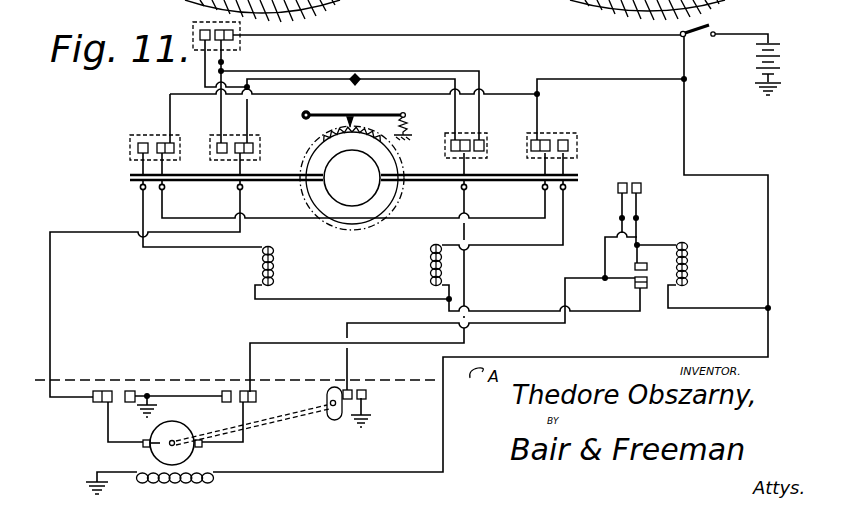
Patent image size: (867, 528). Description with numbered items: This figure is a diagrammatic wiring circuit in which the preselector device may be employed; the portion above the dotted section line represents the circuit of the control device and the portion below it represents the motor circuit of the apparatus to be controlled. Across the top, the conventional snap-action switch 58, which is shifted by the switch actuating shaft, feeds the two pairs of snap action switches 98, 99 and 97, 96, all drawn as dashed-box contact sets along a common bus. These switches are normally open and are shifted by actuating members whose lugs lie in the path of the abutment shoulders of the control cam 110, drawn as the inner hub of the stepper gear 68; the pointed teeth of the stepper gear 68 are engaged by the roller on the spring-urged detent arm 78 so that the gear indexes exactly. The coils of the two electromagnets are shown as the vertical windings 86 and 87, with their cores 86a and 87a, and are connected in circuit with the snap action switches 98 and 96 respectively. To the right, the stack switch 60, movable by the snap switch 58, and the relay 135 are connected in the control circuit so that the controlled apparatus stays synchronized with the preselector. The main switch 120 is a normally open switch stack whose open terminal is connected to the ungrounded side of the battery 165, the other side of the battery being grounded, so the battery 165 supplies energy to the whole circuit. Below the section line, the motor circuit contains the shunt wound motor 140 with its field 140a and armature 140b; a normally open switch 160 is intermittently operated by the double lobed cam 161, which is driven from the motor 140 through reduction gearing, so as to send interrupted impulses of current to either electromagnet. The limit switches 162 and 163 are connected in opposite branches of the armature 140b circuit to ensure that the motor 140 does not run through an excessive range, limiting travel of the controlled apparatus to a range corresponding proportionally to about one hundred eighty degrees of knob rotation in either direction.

The snap-action switch 58 is at (200, 47).
The snap action switch 98 is at (147, 136).
The snap action switch 99 is at (213, 137).
The snap action switch 97 is at (481, 133).
The snap action switch 96 is at (557, 133).
The stepper gear 68 is at (324, 133).
The control cam 110 is at (368, 159).
The arm 78 is at (385, 111).
The main switch 120 is at (704, 38).
The battery 165 is at (778, 43).
The stack switch 60 is at (640, 203).
The solenoid coil 86 is at (263, 262).
The solenoid core 86a is at (325, 261).
The solenoid coil 87 is at (442, 262).
The solenoid core 87a is at (430, 263).
The relay 135 is at (673, 275).
The limit switch 162 is at (118, 392).
The limit switch 163 is at (236, 389).
The normally open switch 160 is at (360, 389).
The double lobed cam 161 is at (330, 418).
The shunt wound motor 140 is at (185, 421).
The field 140a is at (198, 473).
The armature 140b is at (155, 450).